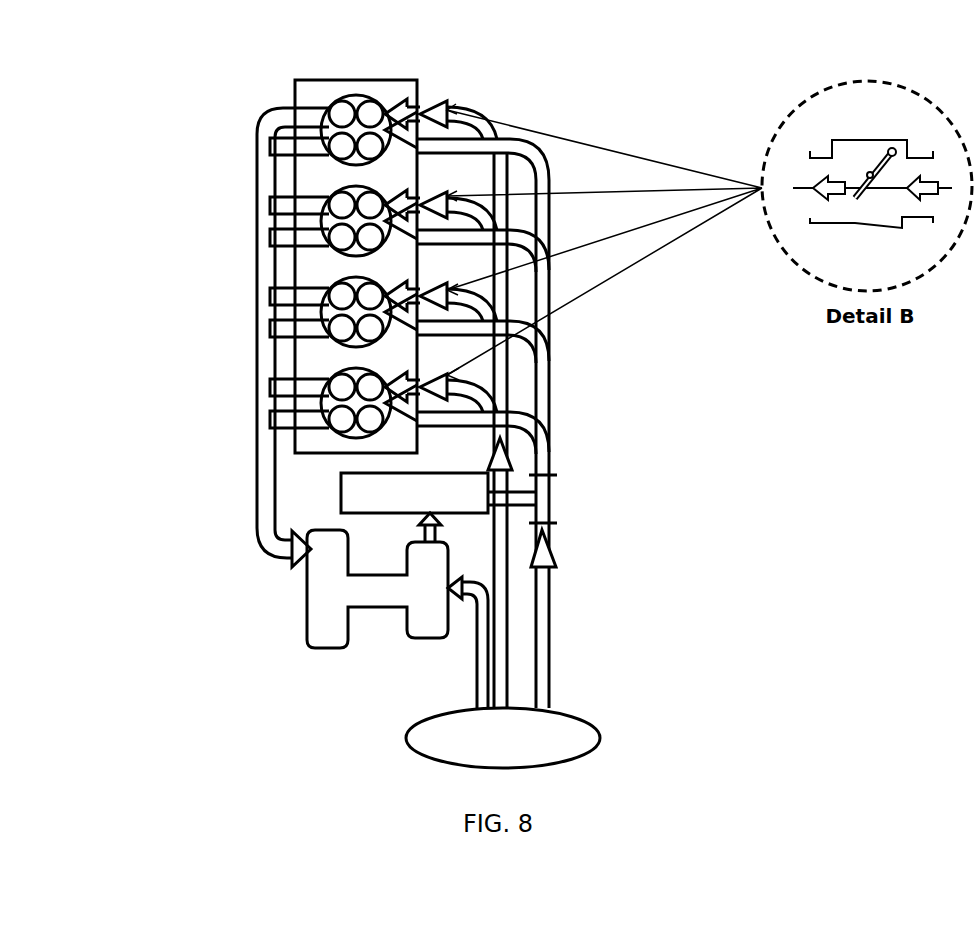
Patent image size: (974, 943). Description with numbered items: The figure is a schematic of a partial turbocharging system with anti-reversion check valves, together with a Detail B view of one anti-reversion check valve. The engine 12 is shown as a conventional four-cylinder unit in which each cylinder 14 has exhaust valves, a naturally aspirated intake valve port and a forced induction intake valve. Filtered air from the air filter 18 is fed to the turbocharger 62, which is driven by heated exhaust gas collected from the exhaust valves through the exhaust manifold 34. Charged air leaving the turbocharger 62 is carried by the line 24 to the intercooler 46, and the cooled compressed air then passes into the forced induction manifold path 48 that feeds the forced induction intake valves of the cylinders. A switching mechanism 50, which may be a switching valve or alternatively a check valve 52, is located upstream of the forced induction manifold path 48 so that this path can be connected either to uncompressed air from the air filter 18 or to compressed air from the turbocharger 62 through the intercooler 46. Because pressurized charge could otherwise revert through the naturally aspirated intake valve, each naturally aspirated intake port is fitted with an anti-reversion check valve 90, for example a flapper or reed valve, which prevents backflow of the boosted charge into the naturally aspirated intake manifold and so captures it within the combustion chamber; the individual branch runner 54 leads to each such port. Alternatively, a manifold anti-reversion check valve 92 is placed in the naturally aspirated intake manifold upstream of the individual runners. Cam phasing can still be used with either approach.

The engine 12 is at (295, 100).
The cylinder 14 is at (353, 93).
The air filter 18 is at (582, 718).
The line 24 is at (428, 522).
The exhaust manifold 34 is at (257, 309).
The intercooler 46 is at (340, 495).
The forced induction manifold path 48 is at (550, 380).
The switching mechanism 50 is at (551, 497).
The check valve 52 is at (552, 549).
The intake passage 54 is at (488, 125).
The turbocharger 62 is at (303, 635).
The anti-reversion check valve 90 is at (445, 103).
The manifold anti-reversion check valve 92 is at (507, 450).